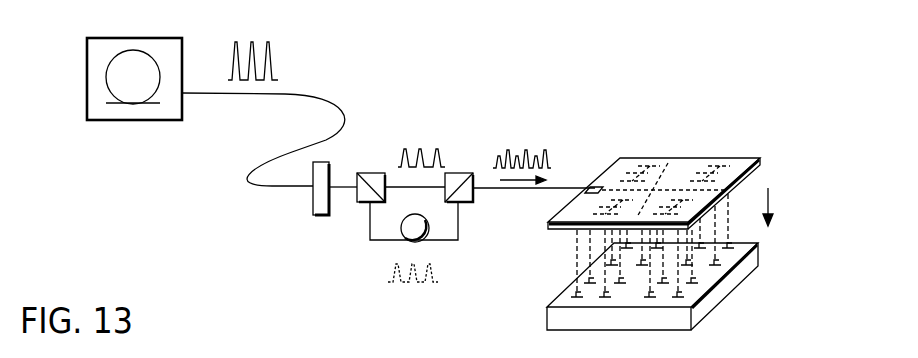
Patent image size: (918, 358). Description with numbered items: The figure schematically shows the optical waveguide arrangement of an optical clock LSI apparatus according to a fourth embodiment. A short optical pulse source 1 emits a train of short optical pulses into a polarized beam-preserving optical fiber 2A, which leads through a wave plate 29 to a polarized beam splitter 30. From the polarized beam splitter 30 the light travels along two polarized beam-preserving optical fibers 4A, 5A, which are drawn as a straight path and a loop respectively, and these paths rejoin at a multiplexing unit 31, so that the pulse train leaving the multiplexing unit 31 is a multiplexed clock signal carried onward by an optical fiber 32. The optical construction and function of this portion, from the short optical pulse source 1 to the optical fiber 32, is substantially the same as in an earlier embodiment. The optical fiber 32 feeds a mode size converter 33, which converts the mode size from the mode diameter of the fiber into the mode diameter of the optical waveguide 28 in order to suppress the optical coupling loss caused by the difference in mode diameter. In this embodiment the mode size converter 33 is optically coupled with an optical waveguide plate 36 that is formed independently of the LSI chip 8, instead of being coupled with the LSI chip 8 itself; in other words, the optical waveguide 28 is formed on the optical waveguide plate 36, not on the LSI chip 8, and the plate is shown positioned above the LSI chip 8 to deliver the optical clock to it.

The short optical pulse source 1 is at (130, 121).
The polarized beam-preserving optical fiber 2A is at (347, 104).
The wave plate 29 is at (312, 202).
The polarized beam splitter 30 is at (362, 205).
The polarized beam-preserving optical fiber 4A is at (397, 184).
The multiplexing unit 31 is at (458, 172).
The polarized beam-preserving optical fiber 5A is at (385, 243).
The optical fiber 32 is at (538, 190).
The mode size converter 33 is at (593, 185).
The optical waveguide 28 is at (672, 162).
The optical waveguide plate 36 is at (735, 172).
The LSI chip 8 is at (708, 298).